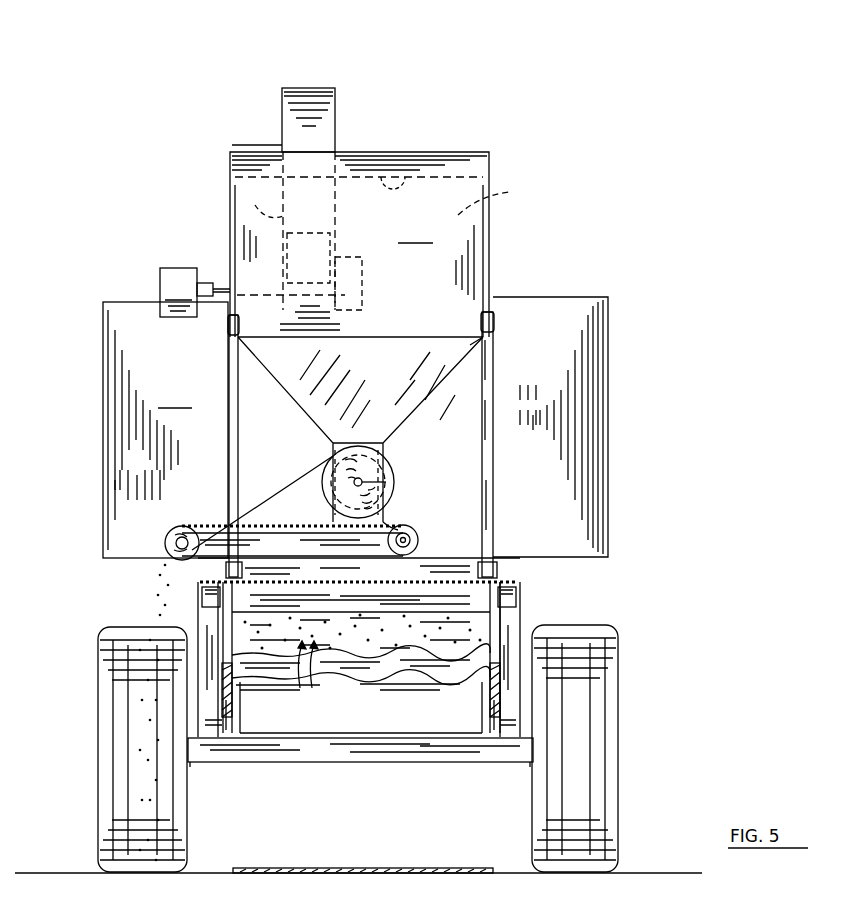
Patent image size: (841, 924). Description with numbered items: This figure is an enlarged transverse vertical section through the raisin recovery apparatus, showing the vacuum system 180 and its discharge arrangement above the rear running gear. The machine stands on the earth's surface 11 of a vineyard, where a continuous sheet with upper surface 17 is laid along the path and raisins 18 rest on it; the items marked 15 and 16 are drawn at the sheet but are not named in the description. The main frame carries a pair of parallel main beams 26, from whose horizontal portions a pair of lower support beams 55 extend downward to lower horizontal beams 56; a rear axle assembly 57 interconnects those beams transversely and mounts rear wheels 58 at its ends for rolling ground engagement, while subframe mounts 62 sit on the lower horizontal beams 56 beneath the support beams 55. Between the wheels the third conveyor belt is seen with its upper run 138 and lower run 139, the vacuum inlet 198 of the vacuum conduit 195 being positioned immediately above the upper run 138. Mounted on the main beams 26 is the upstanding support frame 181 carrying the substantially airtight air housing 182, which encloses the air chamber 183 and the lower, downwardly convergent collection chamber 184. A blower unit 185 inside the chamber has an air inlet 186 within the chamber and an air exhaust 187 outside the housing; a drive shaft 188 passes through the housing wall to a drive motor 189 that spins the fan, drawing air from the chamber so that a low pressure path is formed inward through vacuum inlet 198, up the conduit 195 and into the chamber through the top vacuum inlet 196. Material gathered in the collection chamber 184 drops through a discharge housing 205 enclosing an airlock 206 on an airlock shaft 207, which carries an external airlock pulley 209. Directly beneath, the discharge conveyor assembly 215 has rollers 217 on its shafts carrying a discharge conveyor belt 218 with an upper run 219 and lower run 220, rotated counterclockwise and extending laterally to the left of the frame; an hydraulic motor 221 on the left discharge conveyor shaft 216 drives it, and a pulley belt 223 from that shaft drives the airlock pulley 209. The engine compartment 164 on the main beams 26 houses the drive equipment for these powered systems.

The earth's surface 11 is at (65, 872).
The plate end 15 is at (252, 868).
The plate leader 16 is at (328, 875).
The upper surface 17 is at (396, 868).
The raisins 18 is at (312, 686).
The main beams 26 is at (202, 603).
The lower support beams 55 is at (226, 643).
The lower horizontal beams 56 is at (228, 728).
The rear axle assembly 57 is at (318, 762).
The rear wheels 58 is at (108, 760).
The subframe mounts 62 is at (242, 706).
The upper run 138 is at (370, 675).
The lower run 139 is at (428, 690).
The engine compartment 164 is at (165, 430).
The vacuum system 180 is at (508, 266).
The support frame 181 is at (228, 434).
The air housing 182 is at (359, 333).
The air chamber 183 is at (501, 199).
The collection chamber 184 is at (415, 378).
The blower unit 185 is at (259, 204).
The air inlet 186 is at (362, 270).
The air exhaust 187 is at (305, 88).
The drive shaft 188 is at (248, 288).
The drive motor 189 is at (168, 276).
The vacuum conduit 195 is at (425, 600).
The vacuum inlet 196 is at (404, 170).
The vacuum inlet 198 is at (380, 620).
The discharge housing 205 is at (375, 450).
The airlock 206 is at (387, 460).
The airlock shaft 207 is at (386, 482).
The airlock pulley 209 is at (337, 462).
The discharge conveyor assembly 215 is at (467, 510).
The discharge conveyor shaft 216 is at (164, 537).
The rollers 217 is at (170, 555).
The discharge conveyor belt 218 is at (320, 560).
The upper run 219 is at (385, 528).
The lower run 220 is at (375, 566).
The hydraulic motor 221 is at (192, 530).
The pulley belt 223 is at (298, 480).